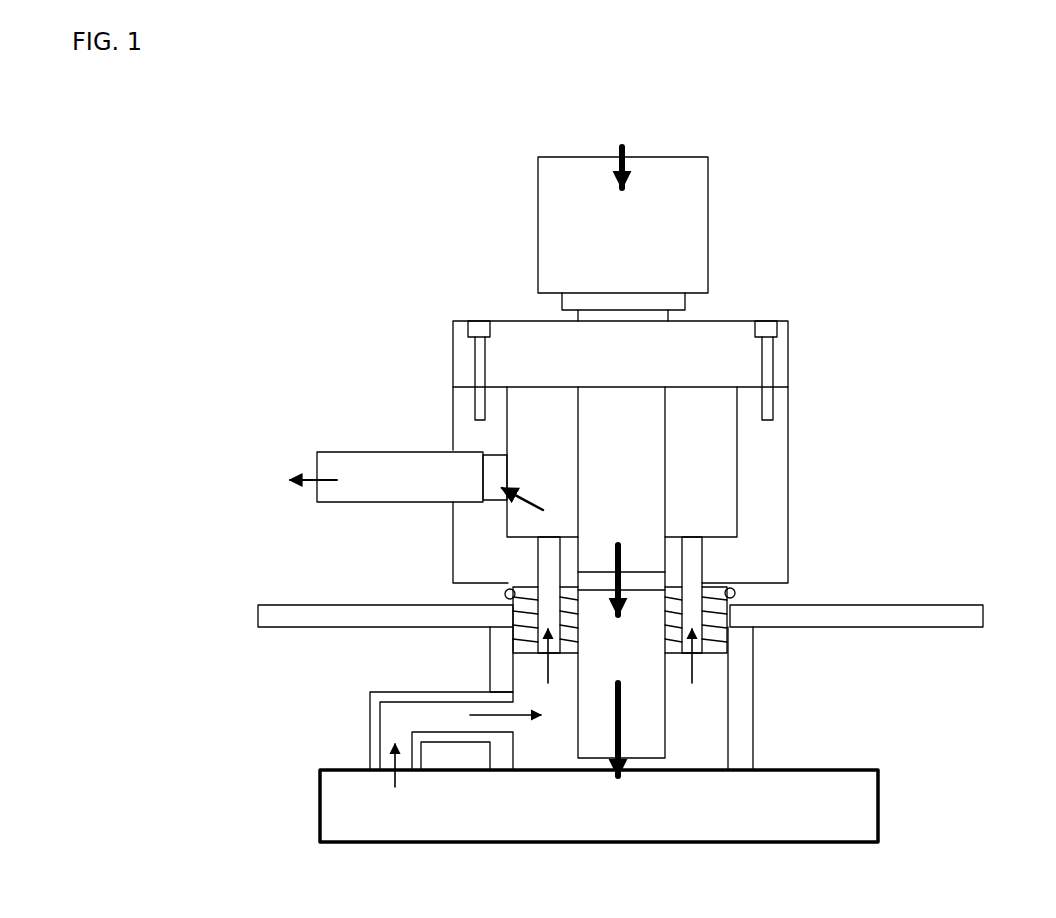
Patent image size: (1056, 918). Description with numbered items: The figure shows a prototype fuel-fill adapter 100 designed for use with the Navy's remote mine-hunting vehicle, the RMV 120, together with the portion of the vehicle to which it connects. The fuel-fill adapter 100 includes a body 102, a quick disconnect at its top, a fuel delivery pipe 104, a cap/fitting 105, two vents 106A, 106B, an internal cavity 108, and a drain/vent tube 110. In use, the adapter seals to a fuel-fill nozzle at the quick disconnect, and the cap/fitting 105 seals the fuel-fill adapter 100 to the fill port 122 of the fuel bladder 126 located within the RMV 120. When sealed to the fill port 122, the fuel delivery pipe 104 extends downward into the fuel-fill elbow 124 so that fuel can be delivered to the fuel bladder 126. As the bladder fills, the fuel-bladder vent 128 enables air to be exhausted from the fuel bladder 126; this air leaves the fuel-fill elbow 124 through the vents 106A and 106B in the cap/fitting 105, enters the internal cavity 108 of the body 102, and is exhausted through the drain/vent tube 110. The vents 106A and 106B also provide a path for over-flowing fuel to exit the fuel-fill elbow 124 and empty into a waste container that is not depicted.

The fuel-fill adapter 100 is at (934, 215).
The body 102 is at (788, 446).
The fuel delivery pipe 104 is at (621, 581).
The cap/fitting 105 is at (733, 598).
The vent 106A is at (540, 571).
The vent 106B is at (690, 570).
The cavity 108 is at (622, 462).
The drain/vent tube 110 is at (393, 481).
The RMV 120 is at (928, 604).
The fill port 122 is at (508, 622).
The fuel-fill elbow 124 is at (715, 713).
The fuel bladder 126 is at (599, 806).
The fuel-bladder vent 128 is at (385, 723).